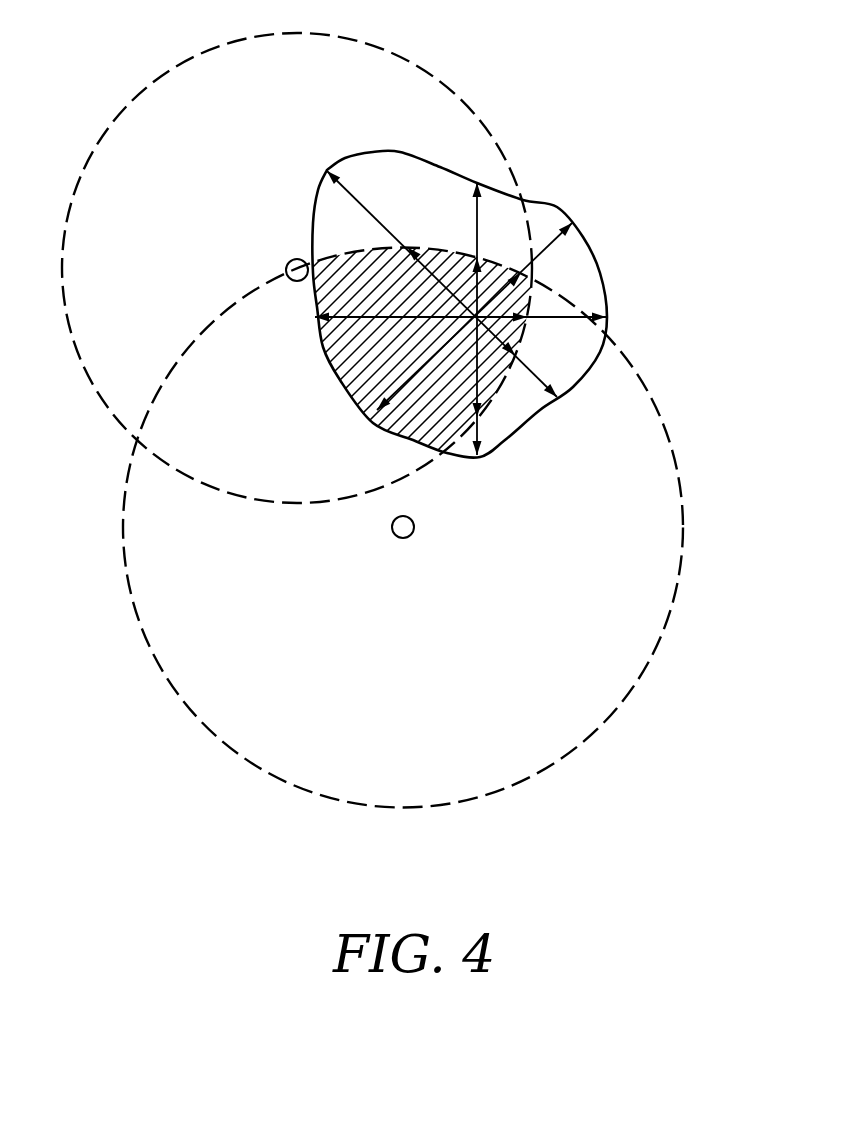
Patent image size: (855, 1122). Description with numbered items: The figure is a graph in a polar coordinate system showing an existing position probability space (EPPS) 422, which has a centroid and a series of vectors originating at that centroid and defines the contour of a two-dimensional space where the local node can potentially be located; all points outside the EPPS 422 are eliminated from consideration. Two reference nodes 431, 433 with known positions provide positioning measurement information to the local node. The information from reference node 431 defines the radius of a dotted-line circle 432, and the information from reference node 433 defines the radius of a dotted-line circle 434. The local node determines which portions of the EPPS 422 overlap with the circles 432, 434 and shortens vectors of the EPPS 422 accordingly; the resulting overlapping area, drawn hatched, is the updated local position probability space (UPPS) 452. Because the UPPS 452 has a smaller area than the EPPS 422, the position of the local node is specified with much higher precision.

The existing position probability space (EPPS) 422 is at (552, 202).
The reference node 431 is at (286, 270).
The dotted-line circle 432 is at (453, 93).
The reference node 433 is at (414, 527).
The dotted-line circle 434 is at (673, 453).
The updated local position probability space (UPPS) 452 is at (523, 285).